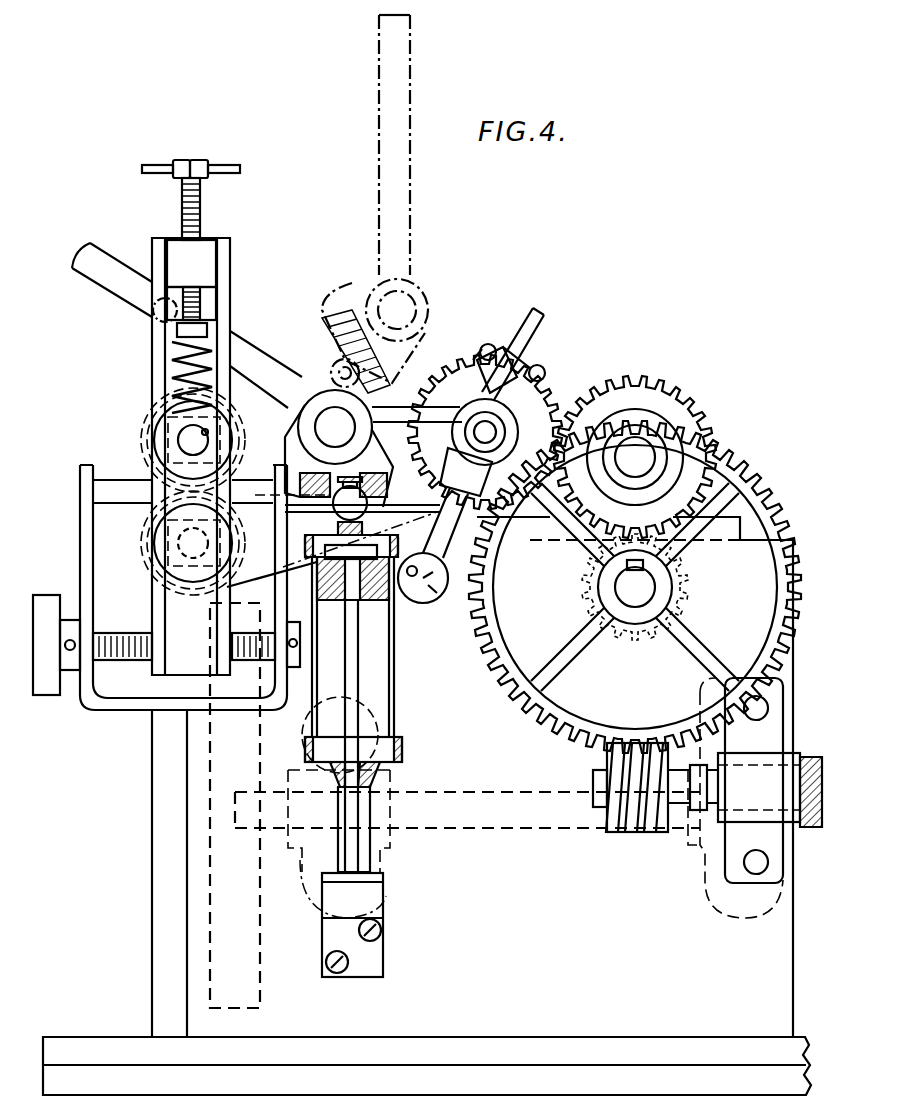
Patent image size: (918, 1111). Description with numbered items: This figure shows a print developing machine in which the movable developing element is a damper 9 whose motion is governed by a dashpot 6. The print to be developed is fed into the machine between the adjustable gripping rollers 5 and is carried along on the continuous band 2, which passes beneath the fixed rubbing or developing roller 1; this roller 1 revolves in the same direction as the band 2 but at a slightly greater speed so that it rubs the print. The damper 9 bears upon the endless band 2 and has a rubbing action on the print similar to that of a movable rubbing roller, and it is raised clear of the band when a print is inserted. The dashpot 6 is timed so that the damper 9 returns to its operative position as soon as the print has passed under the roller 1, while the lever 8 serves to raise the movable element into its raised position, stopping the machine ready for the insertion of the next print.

The fixed rubbing or developing roller 1 is at (468, 378).
The continuous band 2 is at (434, 514).
The adjustable gripping rollers 5 is at (150, 441).
The dashpot 6 is at (394, 645).
The lever 8 is at (379, 124).
The damper 9 is at (352, 278).